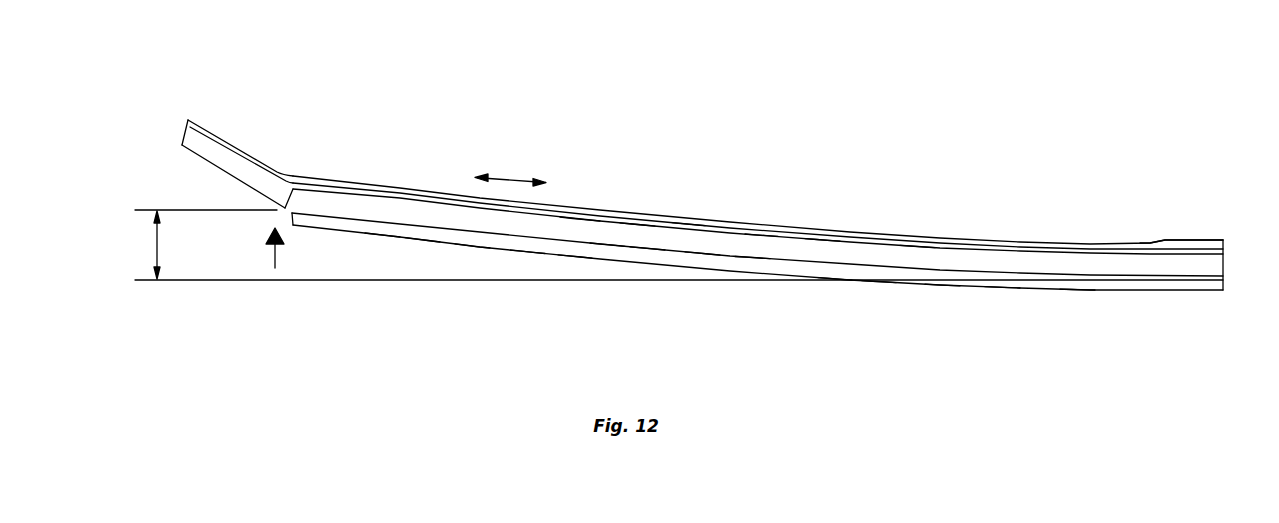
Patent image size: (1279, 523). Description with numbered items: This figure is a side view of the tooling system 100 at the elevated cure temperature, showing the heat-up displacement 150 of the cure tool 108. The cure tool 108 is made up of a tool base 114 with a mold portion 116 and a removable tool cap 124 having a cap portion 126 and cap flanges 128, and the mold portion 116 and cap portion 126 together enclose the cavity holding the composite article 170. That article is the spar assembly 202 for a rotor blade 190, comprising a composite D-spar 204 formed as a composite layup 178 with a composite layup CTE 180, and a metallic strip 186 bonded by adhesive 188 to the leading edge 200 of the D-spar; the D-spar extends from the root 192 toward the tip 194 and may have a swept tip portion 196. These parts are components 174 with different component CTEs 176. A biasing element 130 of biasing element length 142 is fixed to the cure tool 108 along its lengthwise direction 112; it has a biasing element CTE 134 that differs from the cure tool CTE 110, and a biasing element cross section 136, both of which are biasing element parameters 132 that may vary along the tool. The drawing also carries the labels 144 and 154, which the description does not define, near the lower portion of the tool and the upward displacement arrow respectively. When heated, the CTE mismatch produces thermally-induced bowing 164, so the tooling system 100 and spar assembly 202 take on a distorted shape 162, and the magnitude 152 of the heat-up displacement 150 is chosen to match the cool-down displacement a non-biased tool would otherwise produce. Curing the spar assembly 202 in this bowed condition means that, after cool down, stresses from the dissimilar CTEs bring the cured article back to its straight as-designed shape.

The tooling system 100 is at (672, 194).
The cure tool 108 is at (607, 235).
The cure tool CTE 110 is at (634, 232).
The lengthwise direction 112 is at (510, 176).
The tool base 114 is at (703, 245).
The mold portion 116 is at (750, 243).
The tool cap 124 is at (633, 230).
The cap portion 126 is at (688, 222).
The cap flanges 128 is at (760, 237).
The biasing element 130 is at (527, 245).
The biasing element parameter 132 is at (382, 228).
The biasing element CTE 134 is at (423, 232).
The biasing element cross section 136 is at (472, 238).
The biasing element length 142 is at (575, 247).
The base layer 144 is at (323, 218).
The heat-up displacement 150 is at (237, 142).
The magnitude 152 is at (157, 240).
The upward direction 154 is at (275, 250).
The distorted shape 162 is at (357, 223).
The bowing 164 is at (582, 227).
The composite article 170 is at (312, 193).
The component 174 is at (375, 203).
The component coefficients of thermal expansion 176 is at (405, 210).
The composite layup 178 is at (835, 255).
The composite layup CTE 180 is at (878, 258).
The metallic strip 186 is at (943, 262).
The adhesive 188 is at (1003, 265).
The rotor blade 190 is at (1163, 240).
The root 192 is at (1225, 245).
The tip 194 is at (184, 126).
The swept tip portion 196 is at (210, 164).
The leading edge 200 is at (1077, 268).
The spar assembly 202 is at (917, 245).
The composite D-spar 204 is at (822, 242).